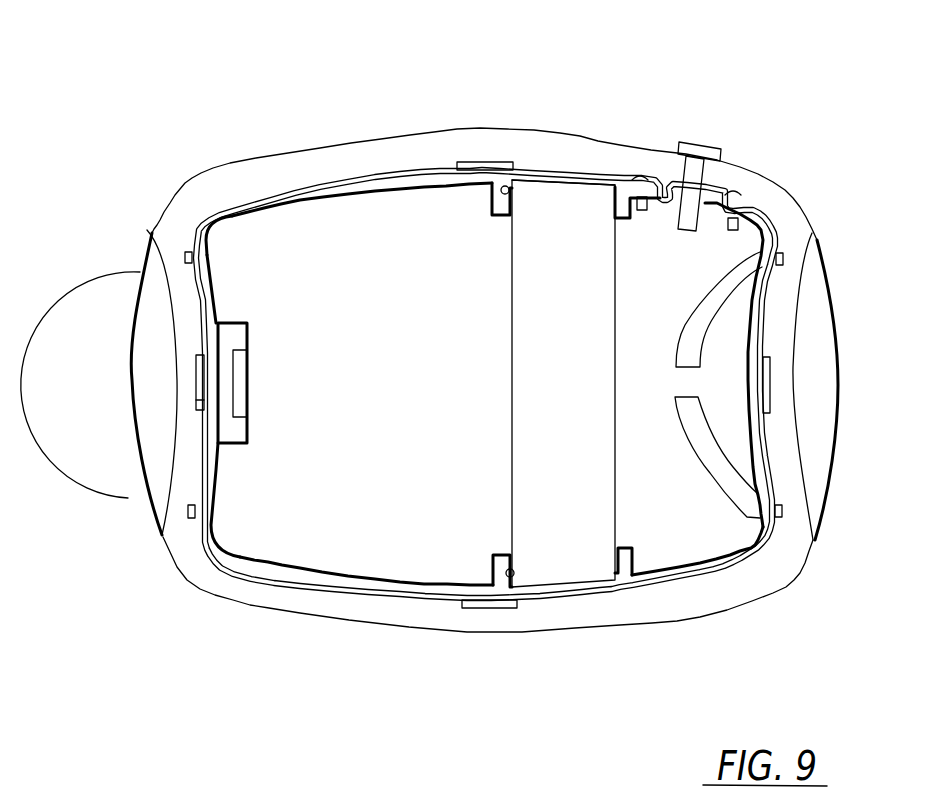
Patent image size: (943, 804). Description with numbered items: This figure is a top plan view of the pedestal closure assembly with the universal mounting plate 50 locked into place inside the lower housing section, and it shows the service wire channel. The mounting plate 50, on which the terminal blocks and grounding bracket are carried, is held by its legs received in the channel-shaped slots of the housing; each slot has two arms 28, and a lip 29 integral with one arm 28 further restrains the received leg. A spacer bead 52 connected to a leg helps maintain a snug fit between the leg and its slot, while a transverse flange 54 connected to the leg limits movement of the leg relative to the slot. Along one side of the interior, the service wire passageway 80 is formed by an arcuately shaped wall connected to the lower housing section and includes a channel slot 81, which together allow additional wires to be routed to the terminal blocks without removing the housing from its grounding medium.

The arm 28 is at (490, 202).
The lip 29 is at (507, 557).
The universal mounting plate 50 is at (587, 227).
The spacer bead 52 is at (503, 188).
The transverse flange 54 is at (558, 183).
The service wire passageway 80 is at (727, 397).
The channel slot 81 is at (683, 382).